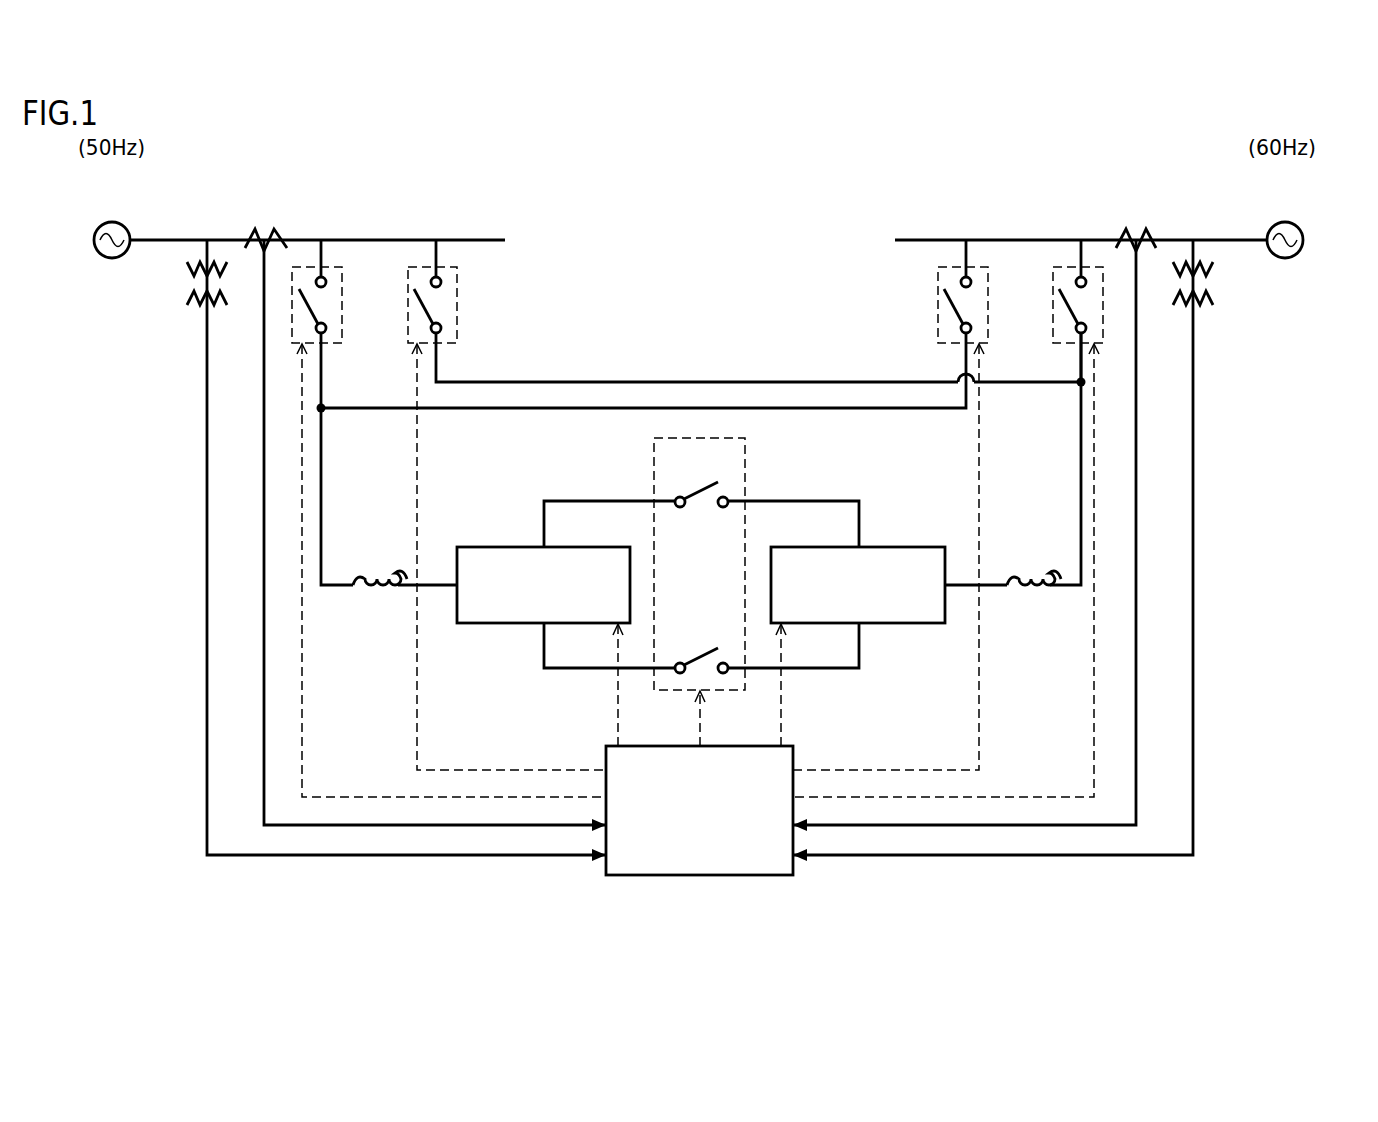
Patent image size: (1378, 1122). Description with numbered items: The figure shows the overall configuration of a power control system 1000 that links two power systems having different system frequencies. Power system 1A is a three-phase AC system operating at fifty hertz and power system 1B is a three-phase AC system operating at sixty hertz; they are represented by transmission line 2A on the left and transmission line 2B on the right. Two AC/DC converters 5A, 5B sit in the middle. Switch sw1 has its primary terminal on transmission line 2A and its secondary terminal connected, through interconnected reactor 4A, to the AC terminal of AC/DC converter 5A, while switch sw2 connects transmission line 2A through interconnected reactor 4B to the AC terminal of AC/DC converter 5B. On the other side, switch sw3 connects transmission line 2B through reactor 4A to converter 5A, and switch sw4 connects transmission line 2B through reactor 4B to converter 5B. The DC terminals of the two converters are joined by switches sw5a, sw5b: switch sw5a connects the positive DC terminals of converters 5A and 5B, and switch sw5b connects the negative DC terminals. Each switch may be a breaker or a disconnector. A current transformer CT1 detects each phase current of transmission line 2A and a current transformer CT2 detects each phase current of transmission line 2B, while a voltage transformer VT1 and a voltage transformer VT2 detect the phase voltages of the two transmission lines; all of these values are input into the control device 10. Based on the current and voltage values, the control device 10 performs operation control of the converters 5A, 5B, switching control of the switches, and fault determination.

The power control system 1000 is at (1375, 124).
The power system 1A is at (109, 222).
The power system 1B is at (1285, 222).
The transmission line 2A is at (487, 237).
The transmission line 2B is at (917, 237).
The current transformer CT1 is at (272, 230).
The current transformer CT2 is at (1147, 230).
The voltage transformer VT1 is at (206, 307).
The voltage transformer VT2 is at (1196, 307).
The switch sw1 is at (313, 316).
The switch sw2 is at (427, 316).
The switch sw3 is at (957, 310).
The switch sw4 is at (1072, 310).
The switch sw5a is at (698, 484).
The switch sw5b is at (698, 651).
The interconnected reactor 4A is at (374, 575).
The interconnected reactor 4B is at (1033, 575).
The AC/DC converter 5A is at (476, 545).
The AC/DC converter 5B is at (930, 545).
The control device 10 is at (743, 875).